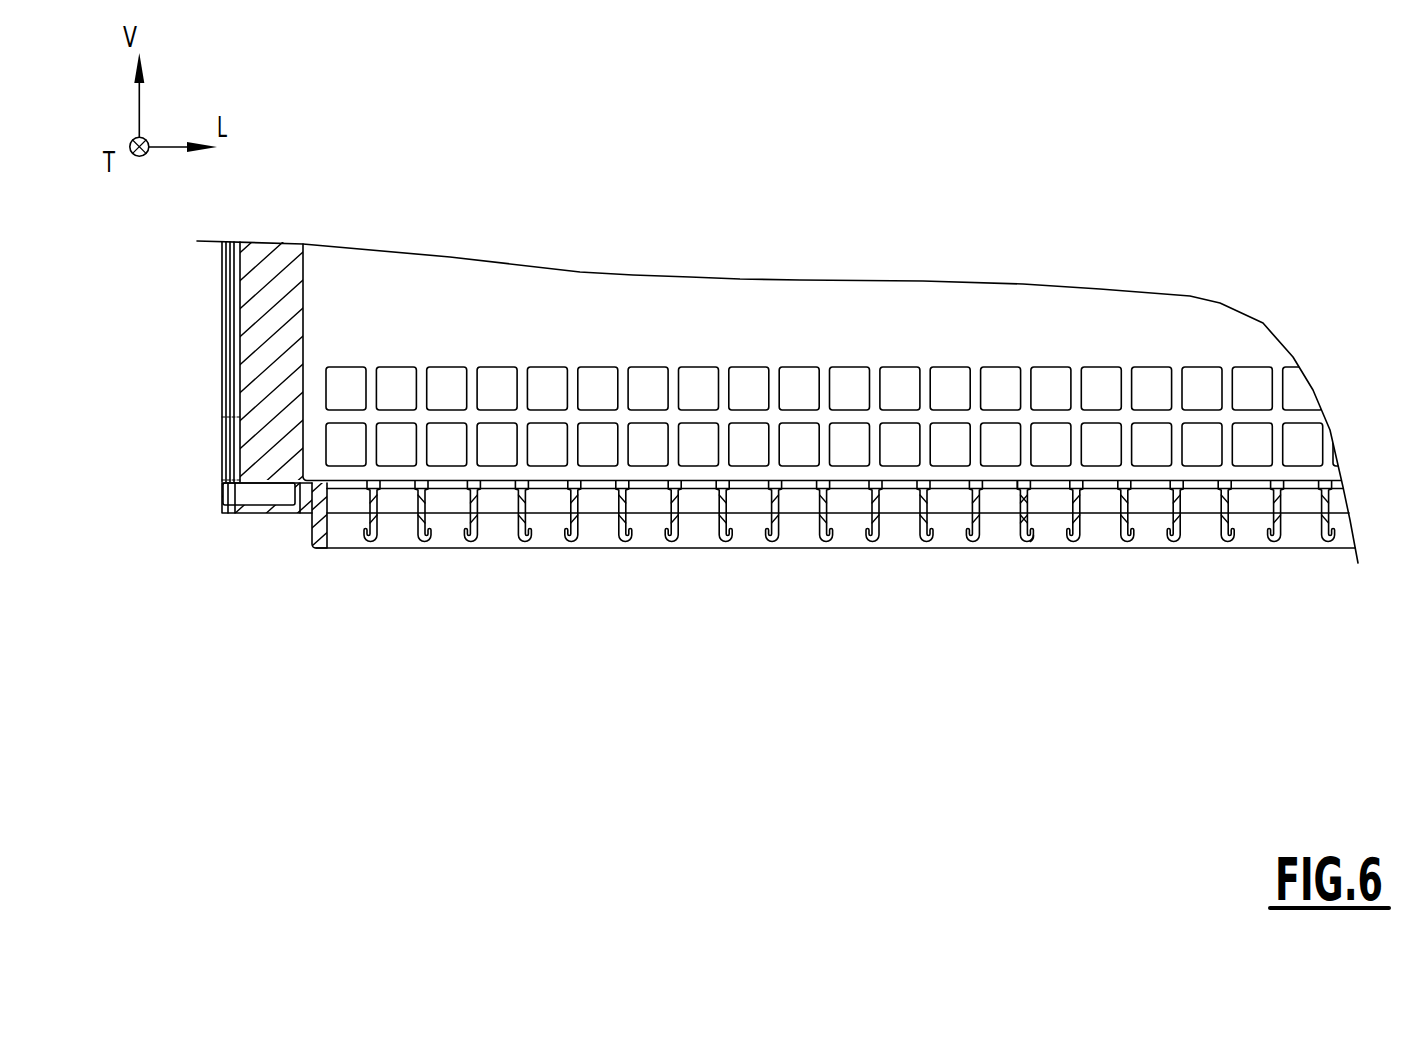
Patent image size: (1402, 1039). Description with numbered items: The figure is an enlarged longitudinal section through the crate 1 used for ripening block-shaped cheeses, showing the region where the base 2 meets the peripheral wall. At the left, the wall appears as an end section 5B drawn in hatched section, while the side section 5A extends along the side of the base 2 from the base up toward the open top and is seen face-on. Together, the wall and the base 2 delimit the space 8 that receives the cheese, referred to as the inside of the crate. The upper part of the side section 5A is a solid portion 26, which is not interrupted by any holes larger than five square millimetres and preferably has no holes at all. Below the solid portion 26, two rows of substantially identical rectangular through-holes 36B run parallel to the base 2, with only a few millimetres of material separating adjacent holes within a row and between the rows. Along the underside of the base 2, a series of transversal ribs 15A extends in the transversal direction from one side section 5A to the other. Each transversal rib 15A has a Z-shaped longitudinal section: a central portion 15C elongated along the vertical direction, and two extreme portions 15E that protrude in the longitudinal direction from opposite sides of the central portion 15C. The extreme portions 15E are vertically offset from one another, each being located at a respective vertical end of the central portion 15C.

The crate 1 is at (167, 474).
The base 2 is at (1297, 444).
The side section 5A is at (626, 310).
The end section 5B is at (212, 357).
The space 8 is at (1081, 316).
The solid portion 26 is at (455, 303).
The rectangular through-holes 36B is at (797, 385).
The transversal rib 15A is at (910, 571).
The central portion 15C is at (1027, 520).
The extreme portions 15E is at (1013, 490).